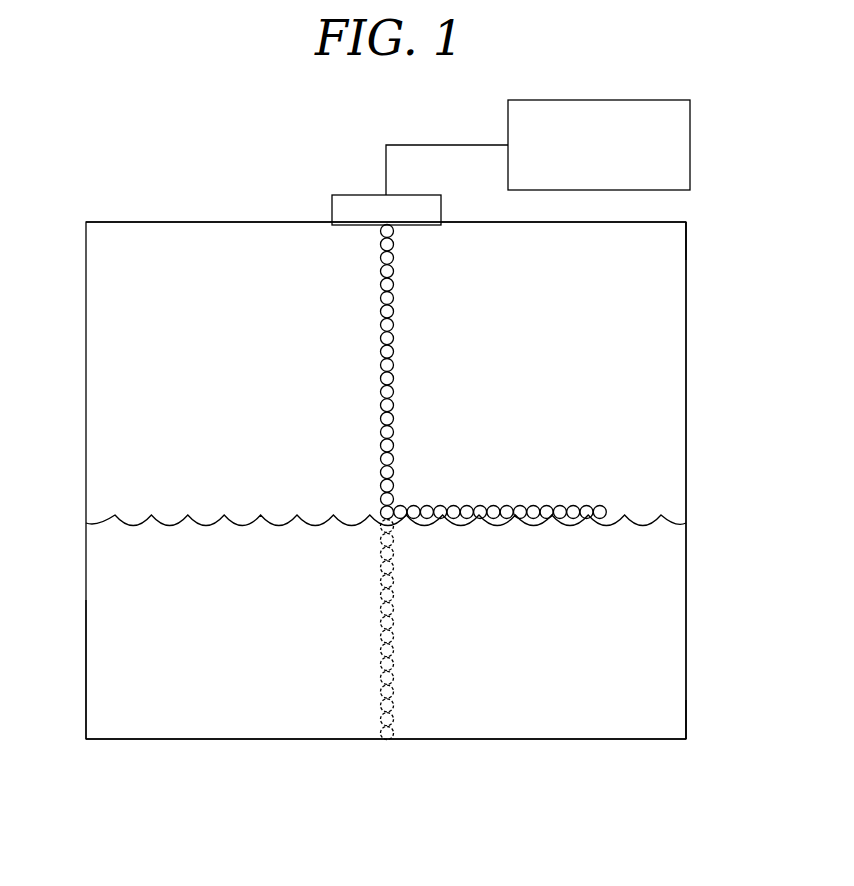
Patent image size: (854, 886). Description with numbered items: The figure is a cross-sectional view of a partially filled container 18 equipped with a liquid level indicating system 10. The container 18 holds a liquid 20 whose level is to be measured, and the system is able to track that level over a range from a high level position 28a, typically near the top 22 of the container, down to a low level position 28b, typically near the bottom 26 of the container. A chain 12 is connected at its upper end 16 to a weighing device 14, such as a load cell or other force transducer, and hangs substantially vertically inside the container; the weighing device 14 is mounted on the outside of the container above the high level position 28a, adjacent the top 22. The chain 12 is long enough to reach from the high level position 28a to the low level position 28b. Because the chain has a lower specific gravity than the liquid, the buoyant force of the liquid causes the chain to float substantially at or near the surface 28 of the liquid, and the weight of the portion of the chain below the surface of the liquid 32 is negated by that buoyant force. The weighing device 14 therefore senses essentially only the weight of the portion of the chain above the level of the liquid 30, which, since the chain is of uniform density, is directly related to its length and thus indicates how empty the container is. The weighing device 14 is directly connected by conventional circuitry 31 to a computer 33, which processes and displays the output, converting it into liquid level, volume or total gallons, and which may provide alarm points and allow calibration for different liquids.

The liquid level indicating system 10 is at (718, 203).
The chain 12 is at (327, 356).
The weighing device 14 is at (350, 195).
The end of chain 16 is at (394, 226).
The container 18 is at (686, 262).
The liquid 20 is at (118, 577).
The top of container 22 is at (150, 222).
The bottom of container 26 is at (280, 740).
The surface of liquid 28 is at (105, 524).
The high level position of liquid 28a is at (686, 232).
The low level position of liquid 28b is at (687, 723).
The portion of chain above the level of the liquid 30 is at (396, 337).
The circuitry 31 is at (445, 145).
The portion of chain below the surface of the liquid 32 is at (497, 522).
The computer 33 is at (523, 100).